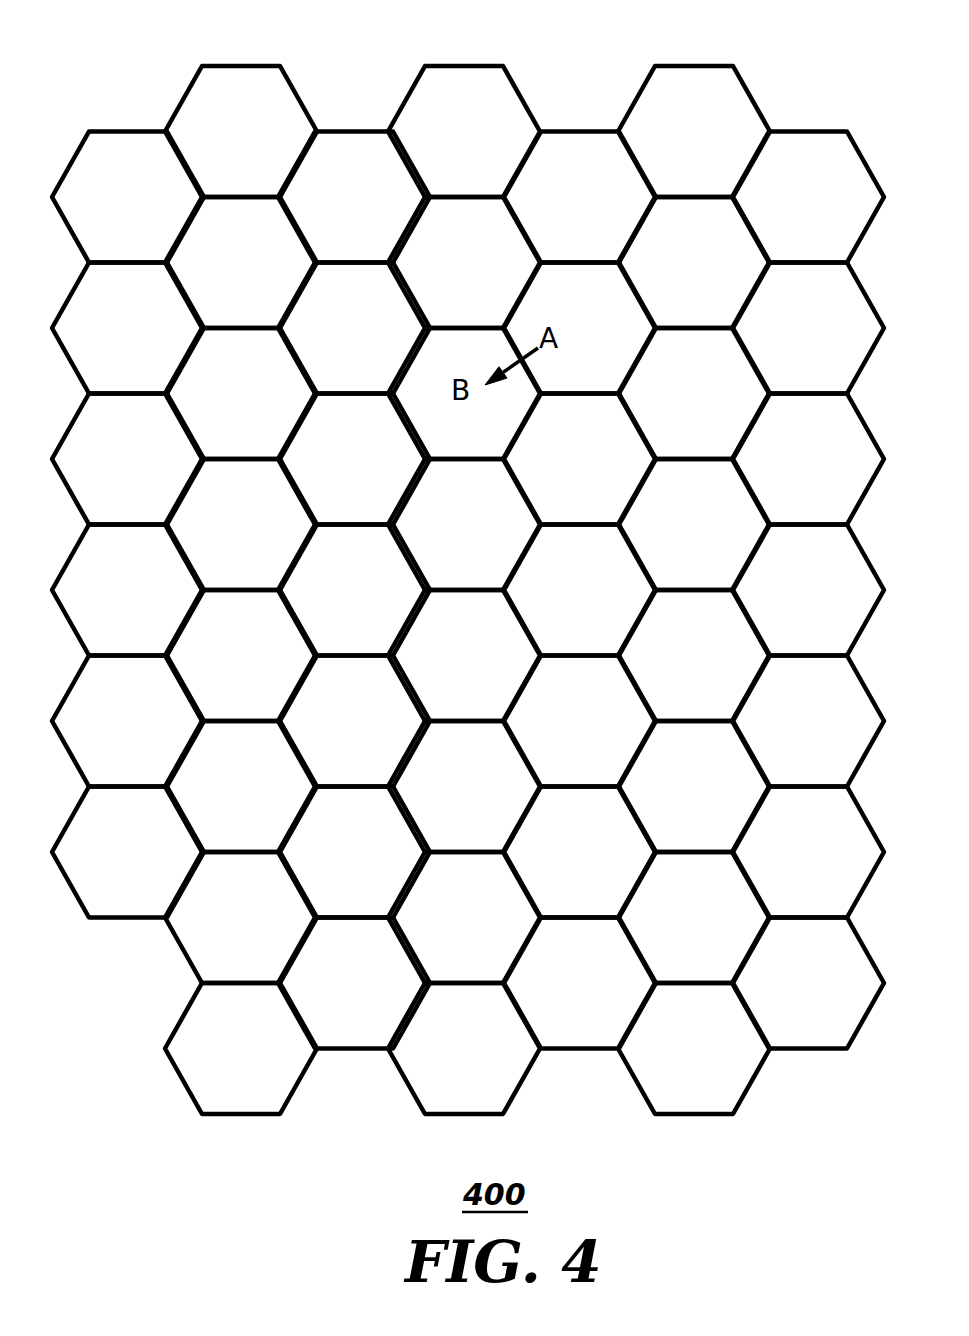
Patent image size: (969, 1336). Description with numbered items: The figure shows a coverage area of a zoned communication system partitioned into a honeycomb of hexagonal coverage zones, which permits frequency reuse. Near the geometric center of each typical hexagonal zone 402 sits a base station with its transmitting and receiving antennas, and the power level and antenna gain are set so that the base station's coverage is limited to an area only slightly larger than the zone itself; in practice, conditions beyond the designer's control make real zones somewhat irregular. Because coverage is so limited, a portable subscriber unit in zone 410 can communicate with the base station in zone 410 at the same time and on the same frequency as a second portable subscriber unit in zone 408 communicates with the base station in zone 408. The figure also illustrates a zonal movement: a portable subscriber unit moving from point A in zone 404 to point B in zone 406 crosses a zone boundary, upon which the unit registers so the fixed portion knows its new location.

The typical hexagonal zone 402 is at (462, 58).
The zone 404 is at (622, 308).
The zone 406 is at (413, 379).
The zone 408 is at (733, 520).
The zone 410 is at (388, 722).